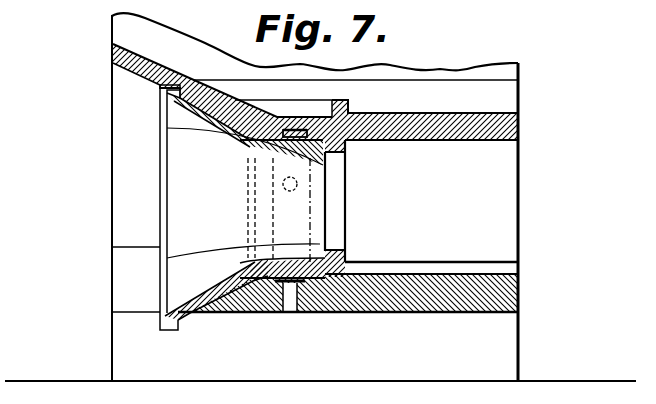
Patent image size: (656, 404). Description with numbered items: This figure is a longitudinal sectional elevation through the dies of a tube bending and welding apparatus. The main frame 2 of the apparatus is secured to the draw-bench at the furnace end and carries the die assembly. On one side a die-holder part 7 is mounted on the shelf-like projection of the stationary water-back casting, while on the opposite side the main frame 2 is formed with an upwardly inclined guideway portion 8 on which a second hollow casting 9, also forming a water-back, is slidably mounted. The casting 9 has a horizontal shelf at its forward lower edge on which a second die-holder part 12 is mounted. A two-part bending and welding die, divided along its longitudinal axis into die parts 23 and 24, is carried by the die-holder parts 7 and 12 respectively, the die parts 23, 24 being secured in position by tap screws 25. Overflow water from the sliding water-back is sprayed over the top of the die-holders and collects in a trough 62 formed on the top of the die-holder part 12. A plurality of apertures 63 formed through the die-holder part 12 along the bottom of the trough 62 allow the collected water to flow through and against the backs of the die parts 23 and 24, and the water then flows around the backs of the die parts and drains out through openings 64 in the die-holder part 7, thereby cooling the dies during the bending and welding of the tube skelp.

The main frame 2 is at (50, 380).
The die-holder part 7 is at (452, 298).
The upwardly inclined guideway portion 8 is at (500, 352).
The second hollow casting 9 is at (455, 73).
The second die-holder part 12 is at (147, 68).
The die part 23 is at (223, 286).
The die part 24 is at (232, 146).
The tap screws 25 is at (282, 185).
The trough 62 is at (340, 112).
The apertures 63 is at (250, 142).
The openings 64 is at (292, 300).